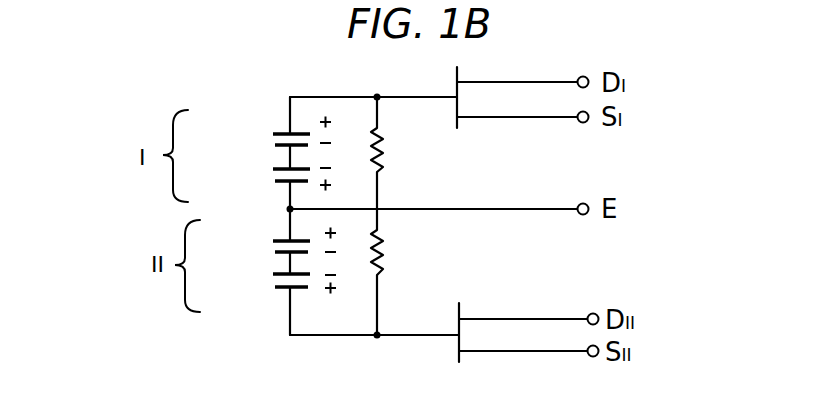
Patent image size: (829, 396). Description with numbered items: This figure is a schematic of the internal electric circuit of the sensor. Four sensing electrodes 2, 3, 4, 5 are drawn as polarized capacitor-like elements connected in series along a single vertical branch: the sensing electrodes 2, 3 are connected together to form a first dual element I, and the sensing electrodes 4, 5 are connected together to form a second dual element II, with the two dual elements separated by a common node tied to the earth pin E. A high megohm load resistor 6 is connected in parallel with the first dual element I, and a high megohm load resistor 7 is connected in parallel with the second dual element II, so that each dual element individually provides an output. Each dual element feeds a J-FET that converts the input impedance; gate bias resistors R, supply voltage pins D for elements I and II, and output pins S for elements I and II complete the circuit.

The sensing electrode 2 is at (272, 143).
The sensing electrode 3 is at (272, 178).
The sensing electrode 4 is at (272, 244).
The sensing electrode 5 is at (272, 281).
The high megohm load resistor 6 is at (373, 150).
The high megohm load resistor 7 is at (374, 257).